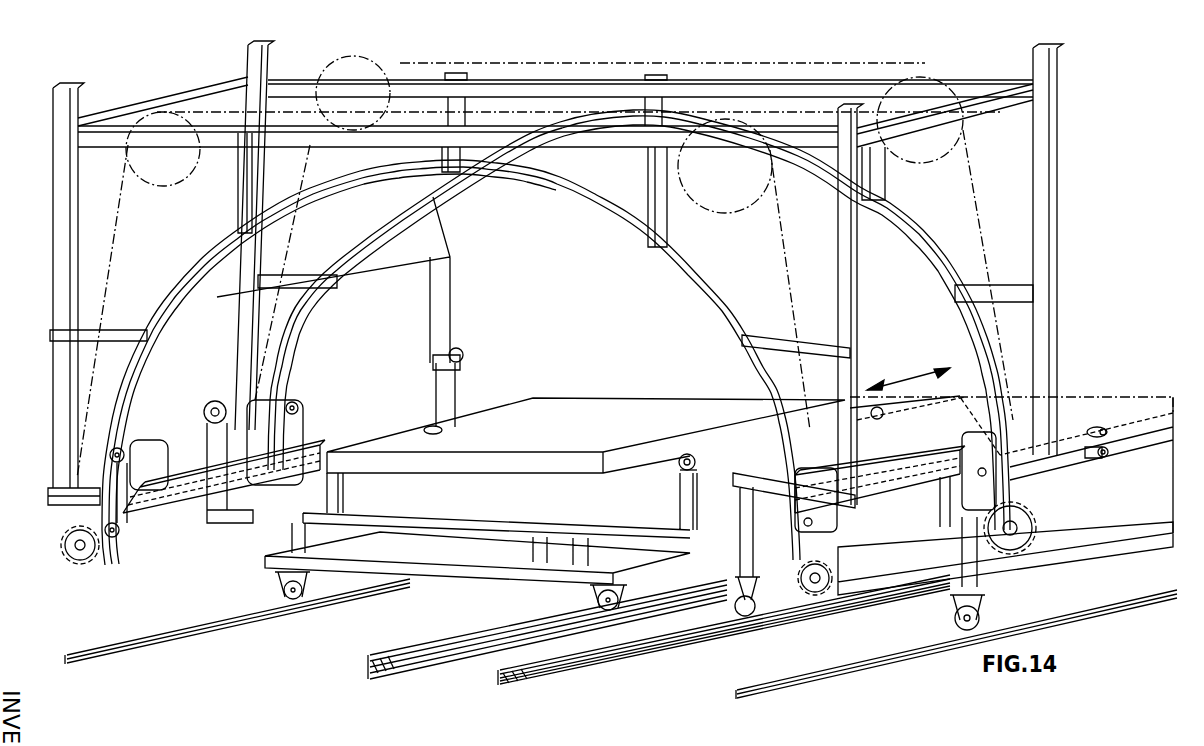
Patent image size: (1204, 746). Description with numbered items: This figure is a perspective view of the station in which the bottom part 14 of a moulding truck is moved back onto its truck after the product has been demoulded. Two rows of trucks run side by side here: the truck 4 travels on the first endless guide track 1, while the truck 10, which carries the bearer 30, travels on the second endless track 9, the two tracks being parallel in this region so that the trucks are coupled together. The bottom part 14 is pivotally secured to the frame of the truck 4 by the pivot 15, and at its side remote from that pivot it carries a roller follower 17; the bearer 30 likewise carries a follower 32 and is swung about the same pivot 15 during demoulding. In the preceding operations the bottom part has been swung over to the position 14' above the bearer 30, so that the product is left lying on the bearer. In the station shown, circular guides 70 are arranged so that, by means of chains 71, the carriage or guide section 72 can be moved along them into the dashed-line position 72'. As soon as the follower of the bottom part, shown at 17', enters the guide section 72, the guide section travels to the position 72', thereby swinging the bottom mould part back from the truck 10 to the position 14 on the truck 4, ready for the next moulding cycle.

The first endless guide track 1 is at (370, 670).
The truck 4 is at (472, 572).
The second endless track 9 is at (790, 673).
The truck 10 is at (920, 588).
The bottom part 14 is at (586, 415).
The bottom part in swung-back position 14' is at (1011, 407).
The pivot 15 is at (687, 470).
The follower 17 is at (421, 412).
The follower in displaced position 17' is at (1107, 398).
The bearer 30 is at (1147, 440).
The follower 32 is at (1103, 458).
The circular guides 70 is at (690, 262).
The chains 71 is at (787, 250).
The carriage or guide section 72 is at (880, 489).
The carriage or guide section in dashed-line position 72' is at (224, 499).